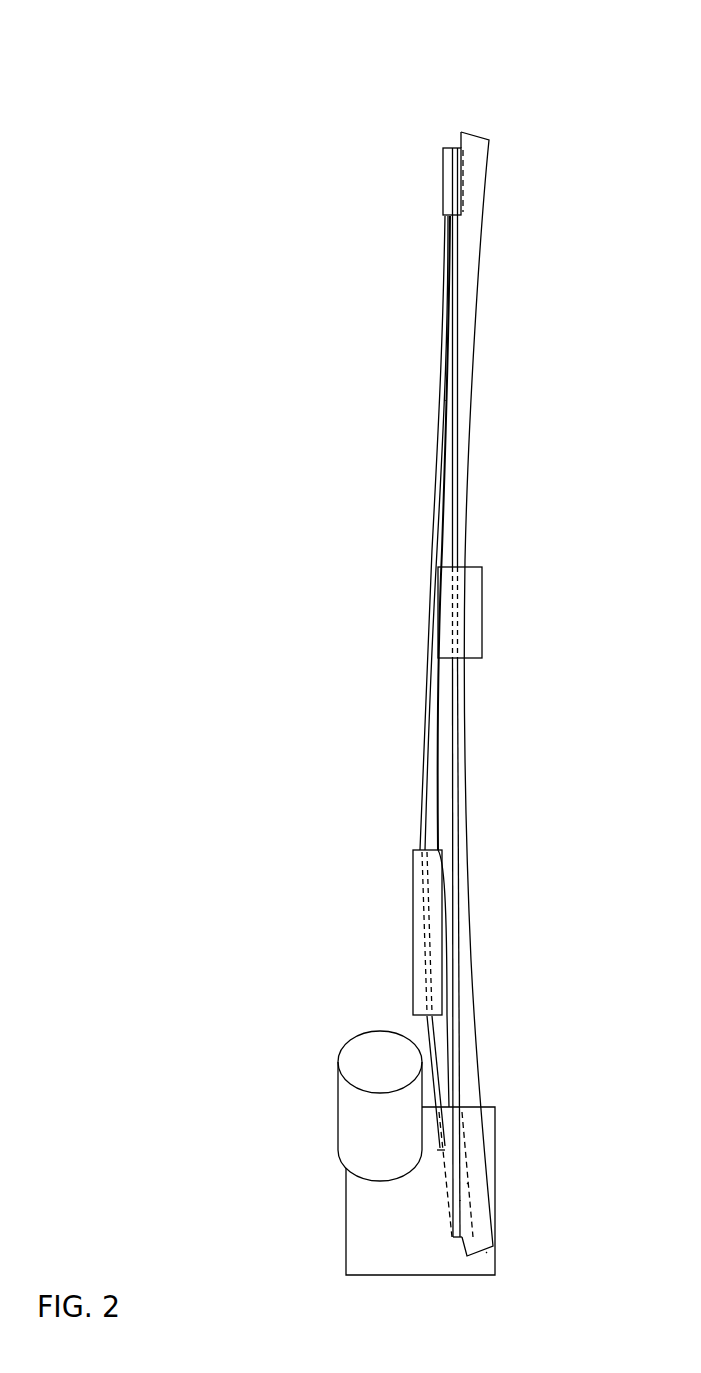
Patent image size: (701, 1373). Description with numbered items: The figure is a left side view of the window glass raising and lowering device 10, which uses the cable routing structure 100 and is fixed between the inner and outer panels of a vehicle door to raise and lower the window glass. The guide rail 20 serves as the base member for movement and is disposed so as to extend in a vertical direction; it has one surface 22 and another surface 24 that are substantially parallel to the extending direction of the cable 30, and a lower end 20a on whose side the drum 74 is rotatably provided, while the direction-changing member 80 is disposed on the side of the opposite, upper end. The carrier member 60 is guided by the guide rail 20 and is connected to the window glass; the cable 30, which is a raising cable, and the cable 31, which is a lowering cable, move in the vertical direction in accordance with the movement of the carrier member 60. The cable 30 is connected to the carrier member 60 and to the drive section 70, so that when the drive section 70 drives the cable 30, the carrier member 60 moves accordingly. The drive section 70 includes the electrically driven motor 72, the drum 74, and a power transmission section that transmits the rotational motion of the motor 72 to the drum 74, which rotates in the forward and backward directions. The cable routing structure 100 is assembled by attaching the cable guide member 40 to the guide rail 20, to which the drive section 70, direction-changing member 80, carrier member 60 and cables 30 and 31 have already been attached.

The window glass raising and lowering device 10 is at (441, 43).
The cable routing structure 100 is at (514, 552).
The guide rail 20 is at (480, 302).
The lower end 20a is at (486, 1252).
The one surface 22 is at (437, 822).
The another surface 24 is at (466, 506).
The cable 30 is at (472, 753).
The cable 31 is at (426, 1033).
The cable guide member 40 is at (491, 610).
The carrier member 60 is at (412, 913).
The drive section 70 is at (338, 1197).
The motor 72 is at (338, 1118).
The drum 74 is at (467, 1183).
The direction-changing member 80 is at (443, 180).